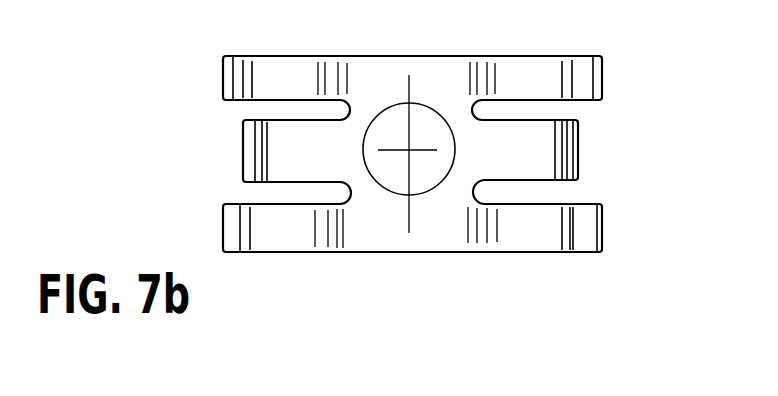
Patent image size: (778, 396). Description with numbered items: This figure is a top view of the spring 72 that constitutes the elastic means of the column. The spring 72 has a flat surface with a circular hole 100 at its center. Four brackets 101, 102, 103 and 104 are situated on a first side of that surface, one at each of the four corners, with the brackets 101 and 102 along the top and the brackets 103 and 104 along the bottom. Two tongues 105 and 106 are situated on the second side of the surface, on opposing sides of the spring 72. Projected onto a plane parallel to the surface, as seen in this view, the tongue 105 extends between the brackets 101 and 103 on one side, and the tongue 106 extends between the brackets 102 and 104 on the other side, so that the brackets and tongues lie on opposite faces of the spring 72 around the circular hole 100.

The spring 72 is at (207, 112).
The circular hole 100 is at (400, 117).
The bracket 101 is at (582, 75).
The bracket 102 is at (223, 77).
The bracket 103 is at (582, 227).
The bracket 104 is at (237, 230).
The tongue 105 is at (568, 145).
The tongue 106 is at (257, 152).